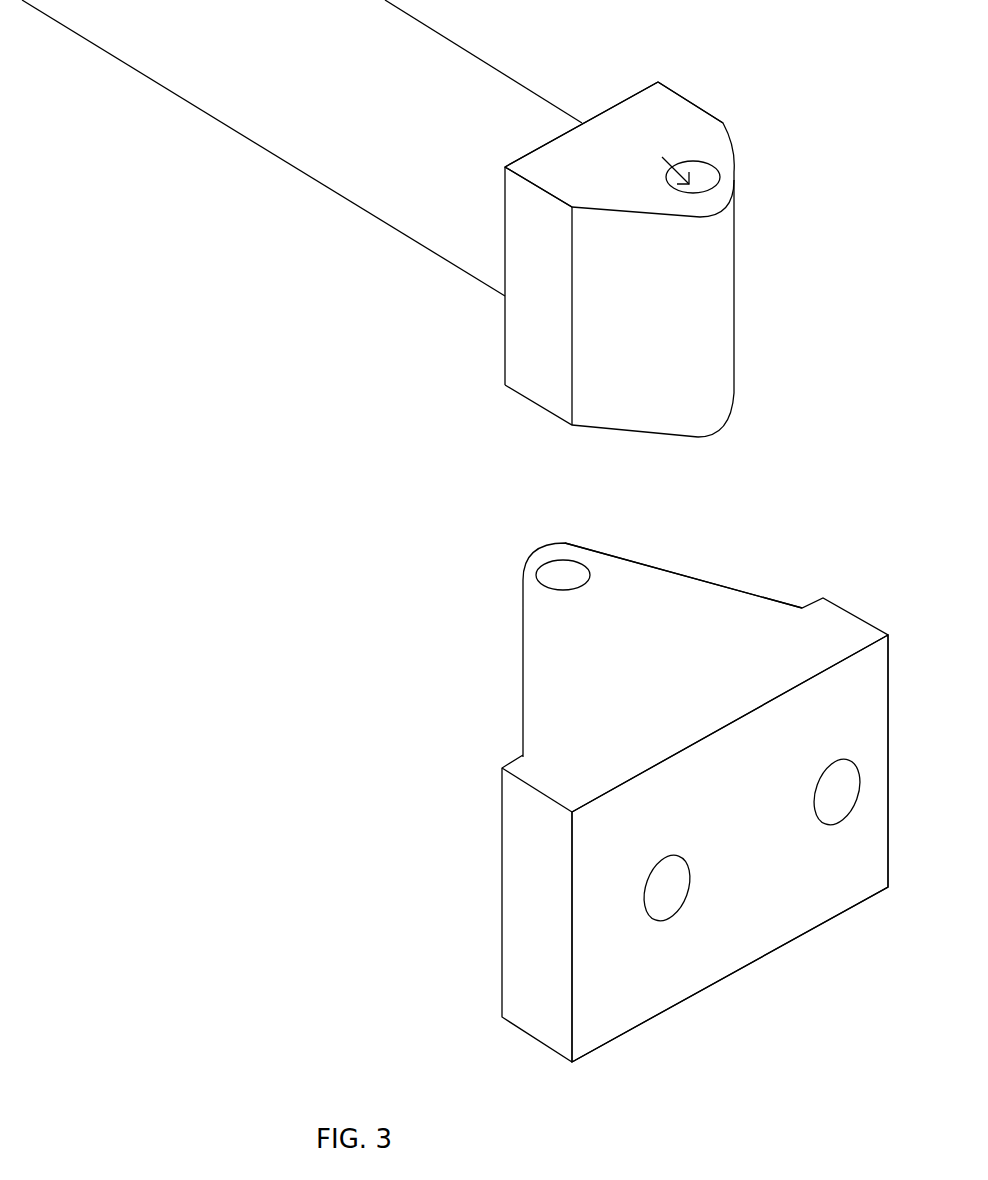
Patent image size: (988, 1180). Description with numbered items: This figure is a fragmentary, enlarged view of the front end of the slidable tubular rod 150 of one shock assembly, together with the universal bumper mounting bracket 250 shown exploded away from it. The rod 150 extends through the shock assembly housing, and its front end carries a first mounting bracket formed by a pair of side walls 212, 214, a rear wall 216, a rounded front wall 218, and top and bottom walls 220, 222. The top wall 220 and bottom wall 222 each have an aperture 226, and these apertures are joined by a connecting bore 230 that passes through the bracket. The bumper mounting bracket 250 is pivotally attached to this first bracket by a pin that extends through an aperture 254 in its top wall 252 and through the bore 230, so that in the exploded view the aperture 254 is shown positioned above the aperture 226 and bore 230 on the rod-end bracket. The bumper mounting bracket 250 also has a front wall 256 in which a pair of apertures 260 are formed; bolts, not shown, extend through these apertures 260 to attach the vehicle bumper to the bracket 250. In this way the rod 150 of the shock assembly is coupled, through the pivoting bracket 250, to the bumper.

The tubular rod 150 is at (388, 210).
The side wall 212 is at (542, 397).
The side wall 214 is at (697, 102).
The rear wall 216 is at (623, 102).
The rounded front wall 218 is at (735, 311).
The top wall 220 is at (710, 149).
The bottom wall 222 is at (698, 437).
The aperture 226 is at (720, 175).
The connecting bore 230 is at (645, 158).
The universal bumper mounting bracket 250 is at (833, 583).
The top wall 252 is at (670, 572).
The aperture 254 is at (577, 570).
The front wall 256 is at (680, 795).
The apertures 260 is at (657, 912).